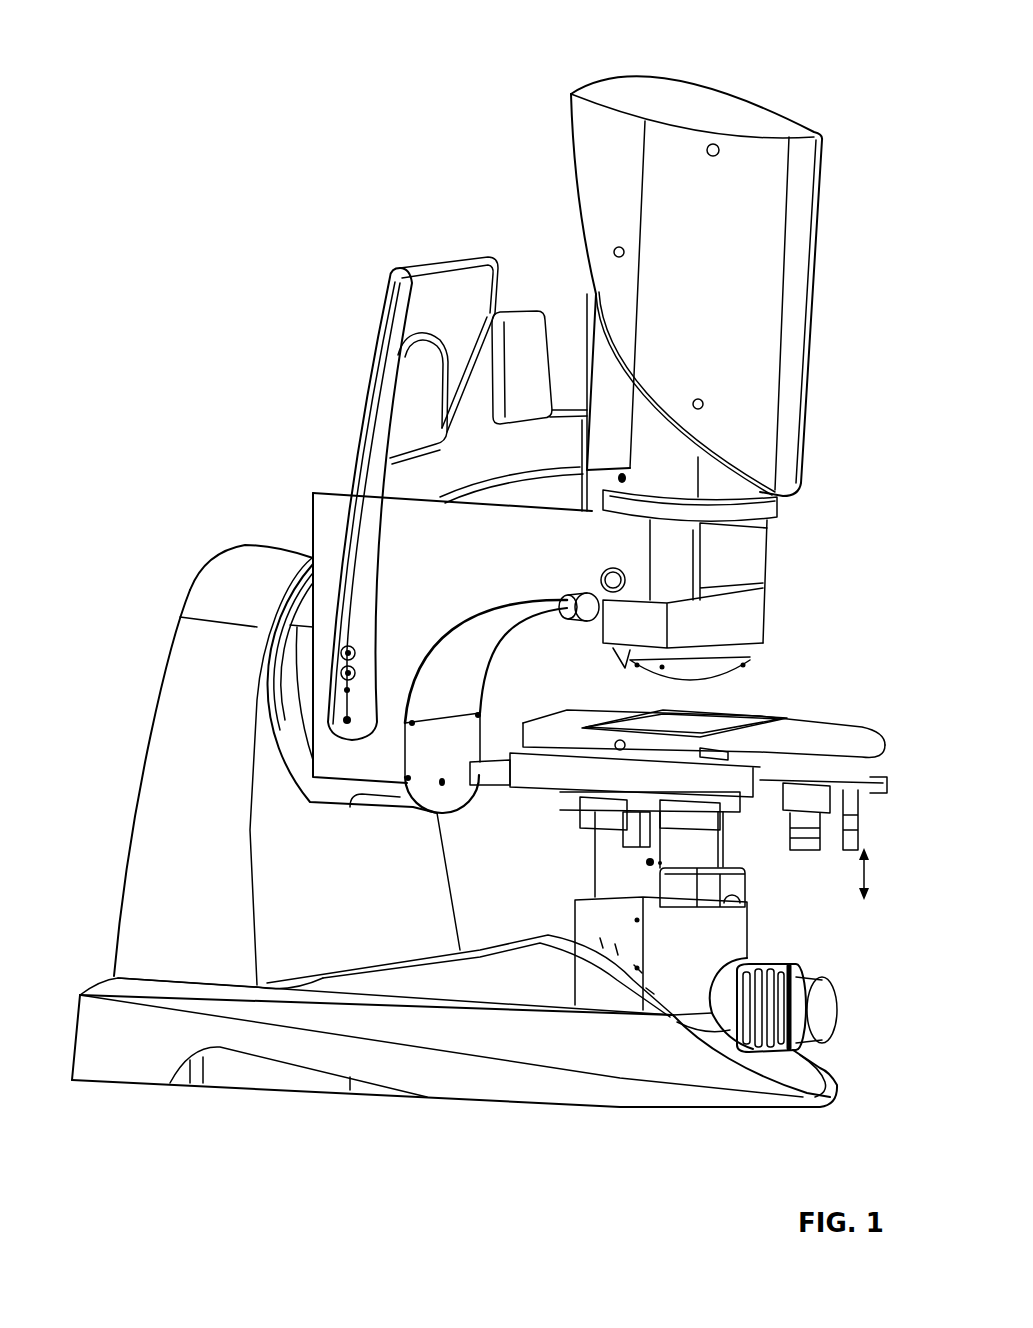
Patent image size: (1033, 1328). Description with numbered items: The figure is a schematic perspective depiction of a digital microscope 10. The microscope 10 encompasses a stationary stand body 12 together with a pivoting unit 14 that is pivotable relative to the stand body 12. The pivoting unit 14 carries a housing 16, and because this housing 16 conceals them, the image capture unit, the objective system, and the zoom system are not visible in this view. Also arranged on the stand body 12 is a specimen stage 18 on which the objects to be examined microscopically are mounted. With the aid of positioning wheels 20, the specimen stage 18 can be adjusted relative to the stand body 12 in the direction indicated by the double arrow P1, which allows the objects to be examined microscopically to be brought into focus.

The microscope 10 is at (176, 164).
The stand body 12 is at (461, 1085).
The pivoting unit 14 is at (443, 208).
The housing 16 is at (752, 188).
The specimen stage 18 is at (818, 730).
The positioning wheels 20 is at (788, 956).
The double arrow P1 is at (864, 875).